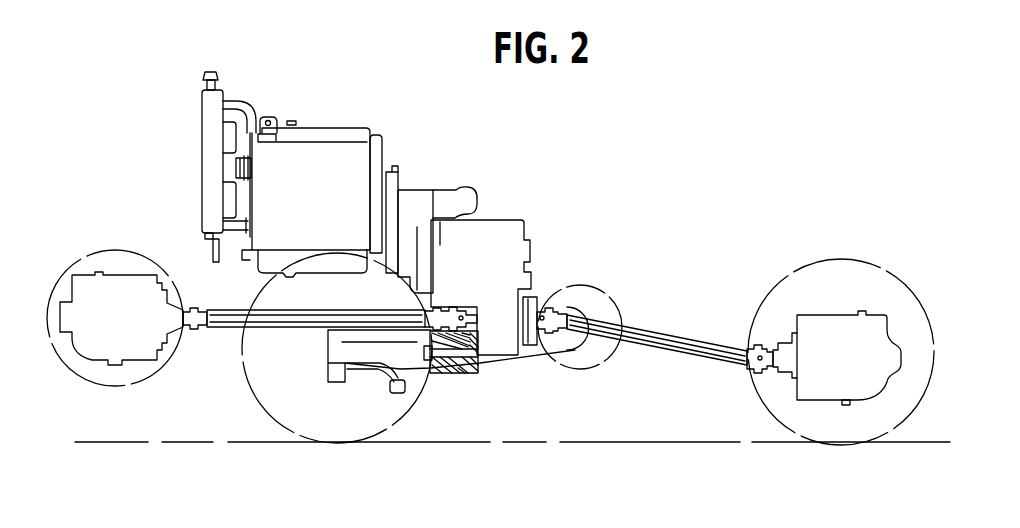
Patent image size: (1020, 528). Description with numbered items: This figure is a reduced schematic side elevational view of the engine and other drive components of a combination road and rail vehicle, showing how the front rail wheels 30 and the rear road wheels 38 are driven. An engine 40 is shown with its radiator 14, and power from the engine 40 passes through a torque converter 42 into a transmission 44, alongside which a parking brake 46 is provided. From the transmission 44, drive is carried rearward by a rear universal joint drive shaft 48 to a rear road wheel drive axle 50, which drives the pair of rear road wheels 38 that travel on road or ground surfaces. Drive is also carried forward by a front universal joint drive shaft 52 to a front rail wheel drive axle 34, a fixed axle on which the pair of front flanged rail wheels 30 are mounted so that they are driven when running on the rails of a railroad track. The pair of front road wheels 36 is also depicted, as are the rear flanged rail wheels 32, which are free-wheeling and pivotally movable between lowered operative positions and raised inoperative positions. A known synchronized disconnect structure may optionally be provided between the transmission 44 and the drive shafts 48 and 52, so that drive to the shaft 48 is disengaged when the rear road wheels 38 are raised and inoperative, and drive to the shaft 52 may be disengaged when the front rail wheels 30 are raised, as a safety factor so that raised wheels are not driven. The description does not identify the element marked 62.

The radiator 14 is at (202, 155).
The front flanged rail wheels 30 is at (80, 373).
The rear flanged rail wheels 32 is at (611, 290).
The front rail wheel drive axle 34 is at (123, 316).
The front road wheels 36 is at (245, 397).
The rear road wheels 38 is at (833, 267).
The engine 40 is at (325, 203).
The torque converter 42 is at (418, 190).
The transmission 44 is at (497, 263).
The parking brake 46 is at (530, 297).
The rear universal joint drive shaft 48 is at (660, 344).
The rear road wheel drive axle 50 is at (852, 360).
The front universal joint drive shaft 52 is at (273, 328).
The bearing block 62 is at (458, 373).